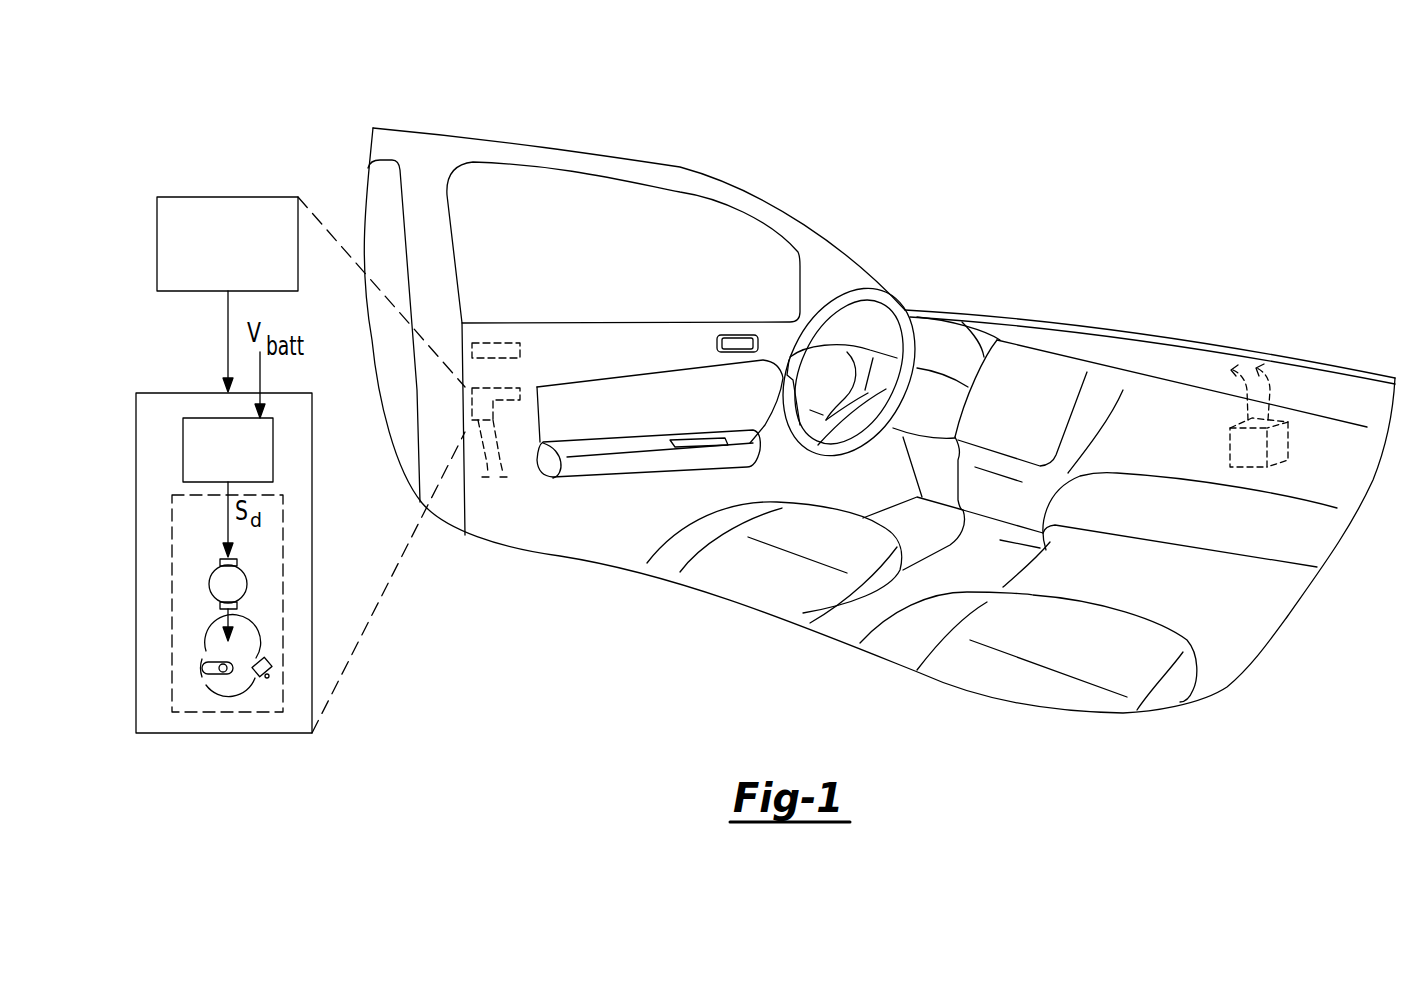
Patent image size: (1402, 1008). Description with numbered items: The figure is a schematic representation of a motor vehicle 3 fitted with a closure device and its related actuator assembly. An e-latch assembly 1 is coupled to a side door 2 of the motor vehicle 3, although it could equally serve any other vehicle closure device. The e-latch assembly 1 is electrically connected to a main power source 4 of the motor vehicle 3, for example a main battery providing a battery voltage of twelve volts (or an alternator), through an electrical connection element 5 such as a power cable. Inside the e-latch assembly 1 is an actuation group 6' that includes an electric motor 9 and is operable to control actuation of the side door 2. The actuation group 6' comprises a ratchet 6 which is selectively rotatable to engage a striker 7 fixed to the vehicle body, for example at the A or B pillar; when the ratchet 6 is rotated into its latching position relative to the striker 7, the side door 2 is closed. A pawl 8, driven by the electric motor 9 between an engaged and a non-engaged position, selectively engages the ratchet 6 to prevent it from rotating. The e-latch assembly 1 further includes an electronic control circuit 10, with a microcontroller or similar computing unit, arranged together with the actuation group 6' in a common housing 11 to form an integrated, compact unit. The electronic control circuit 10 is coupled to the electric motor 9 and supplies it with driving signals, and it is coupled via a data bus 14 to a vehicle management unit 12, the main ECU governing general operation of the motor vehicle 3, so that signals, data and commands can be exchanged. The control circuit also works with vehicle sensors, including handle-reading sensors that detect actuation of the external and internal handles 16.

The e-latch assembly 1 is at (152, 377).
The side door 2 is at (336, 193).
The motor vehicle 3 is at (1105, 250).
The main power source 4 is at (1228, 447).
The electrical connection element 5 is at (1273, 410).
The ratchet 6 is at (223, 644).
The actuation group 6' is at (227, 651).
The striker 7 is at (202, 668).
The pawl 8 is at (268, 663).
The electric motor 9 is at (210, 582).
The electronic control circuit 10 is at (183, 450).
The housing 11 is at (291, 733).
The vehicle management unit 12 is at (172, 197).
The data bus 14 is at (228, 320).
The handles 16 is at (495, 343).